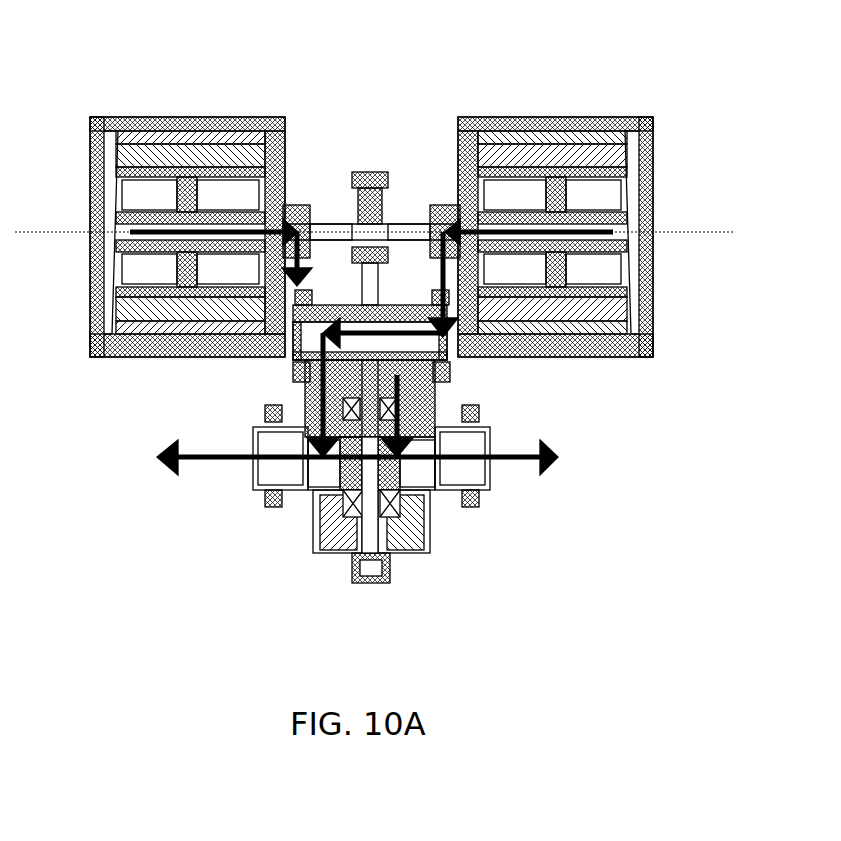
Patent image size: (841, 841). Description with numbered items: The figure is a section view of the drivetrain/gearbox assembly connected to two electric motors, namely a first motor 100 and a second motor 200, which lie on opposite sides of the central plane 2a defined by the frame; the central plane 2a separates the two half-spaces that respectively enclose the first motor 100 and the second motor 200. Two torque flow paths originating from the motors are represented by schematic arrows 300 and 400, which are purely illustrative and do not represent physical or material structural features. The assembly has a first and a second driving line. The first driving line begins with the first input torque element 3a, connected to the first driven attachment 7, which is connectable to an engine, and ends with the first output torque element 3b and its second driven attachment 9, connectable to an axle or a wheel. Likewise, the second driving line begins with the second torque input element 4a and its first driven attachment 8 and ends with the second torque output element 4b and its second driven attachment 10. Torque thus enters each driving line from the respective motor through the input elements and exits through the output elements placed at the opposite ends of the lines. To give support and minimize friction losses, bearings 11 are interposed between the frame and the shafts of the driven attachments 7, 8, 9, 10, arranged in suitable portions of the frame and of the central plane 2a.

The first motor 100 is at (208, 173).
The second motor 200 is at (520, 148).
The schematic arrow 300 is at (150, 228).
The schematic arrow 400 is at (375, 333).
The first driven attachment 7 is at (285, 203).
The first driven attachment 8 is at (445, 203).
The first input torque element 3a is at (332, 222).
The second torque input element 4a is at (402, 222).
The central plane 2a is at (370, 540).
The second driven attachment 9 is at (480, 415).
The second driven attachment 10 is at (263, 443).
The bearings 11 is at (297, 297).
The second torque output element 4b is at (293, 470).
The first output torque element 3b is at (462, 465).